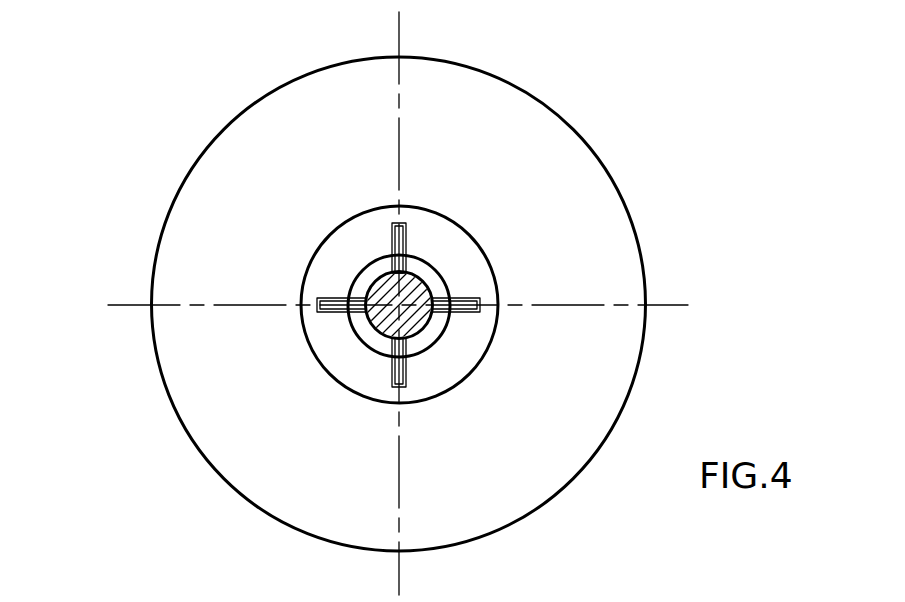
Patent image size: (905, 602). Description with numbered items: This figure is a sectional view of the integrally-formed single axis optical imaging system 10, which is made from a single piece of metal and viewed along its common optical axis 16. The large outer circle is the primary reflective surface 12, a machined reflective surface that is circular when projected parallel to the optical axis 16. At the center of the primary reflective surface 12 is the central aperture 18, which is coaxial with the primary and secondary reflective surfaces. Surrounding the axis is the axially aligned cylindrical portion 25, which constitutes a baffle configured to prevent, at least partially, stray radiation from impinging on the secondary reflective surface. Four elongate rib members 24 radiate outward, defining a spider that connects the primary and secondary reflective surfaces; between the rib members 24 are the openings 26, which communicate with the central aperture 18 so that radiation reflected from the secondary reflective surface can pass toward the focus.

The single axis optical imaging system 10 is at (100, 466).
The primary reflective surface 12 is at (597, 223).
The optical axis 16 is at (404, 272).
The central aperture 18 is at (358, 343).
The elongate rib members 24 is at (392, 230).
The cylindrical portion 25 is at (493, 262).
The openings 26 is at (362, 242).